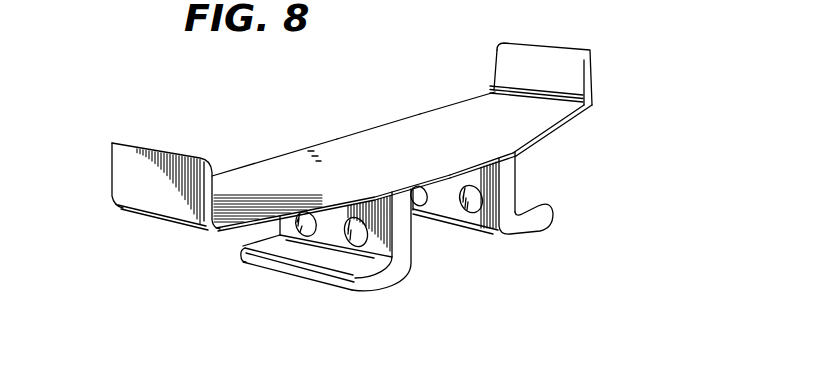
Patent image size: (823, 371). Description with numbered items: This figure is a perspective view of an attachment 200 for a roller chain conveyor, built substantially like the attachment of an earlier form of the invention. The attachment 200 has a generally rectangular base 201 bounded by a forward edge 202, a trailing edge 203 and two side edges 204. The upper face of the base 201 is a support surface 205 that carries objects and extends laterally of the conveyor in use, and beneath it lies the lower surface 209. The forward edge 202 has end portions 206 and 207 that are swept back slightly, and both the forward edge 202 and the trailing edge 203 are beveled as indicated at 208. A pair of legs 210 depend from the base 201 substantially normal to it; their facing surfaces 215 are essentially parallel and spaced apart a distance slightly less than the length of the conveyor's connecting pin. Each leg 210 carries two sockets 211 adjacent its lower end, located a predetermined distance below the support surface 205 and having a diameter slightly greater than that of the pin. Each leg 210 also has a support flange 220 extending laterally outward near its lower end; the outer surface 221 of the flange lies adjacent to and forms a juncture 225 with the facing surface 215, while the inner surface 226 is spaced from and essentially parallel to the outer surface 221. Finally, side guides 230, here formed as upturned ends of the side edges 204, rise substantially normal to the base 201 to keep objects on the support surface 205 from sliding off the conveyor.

The attachment 200 is at (613, 150).
The base 201 is at (457, 108).
The forward edge 202 is at (462, 168).
The trailing edge 203 is at (337, 137).
The side edges 204 is at (200, 228).
The support surface 205 is at (423, 143).
The end portion 206 is at (552, 133).
The end portion 207 is at (343, 197).
The bevel 208 is at (535, 140).
The lower surface 209 is at (213, 231).
The legs 210 is at (227, 231).
The sockets 211 is at (362, 237).
The facing surface 215 is at (483, 218).
The support flange 220 is at (315, 273).
The outer surface 221 is at (372, 288).
The juncture 225 is at (407, 272).
The inner surface 226 is at (287, 249).
The side guides 230 is at (112, 160).